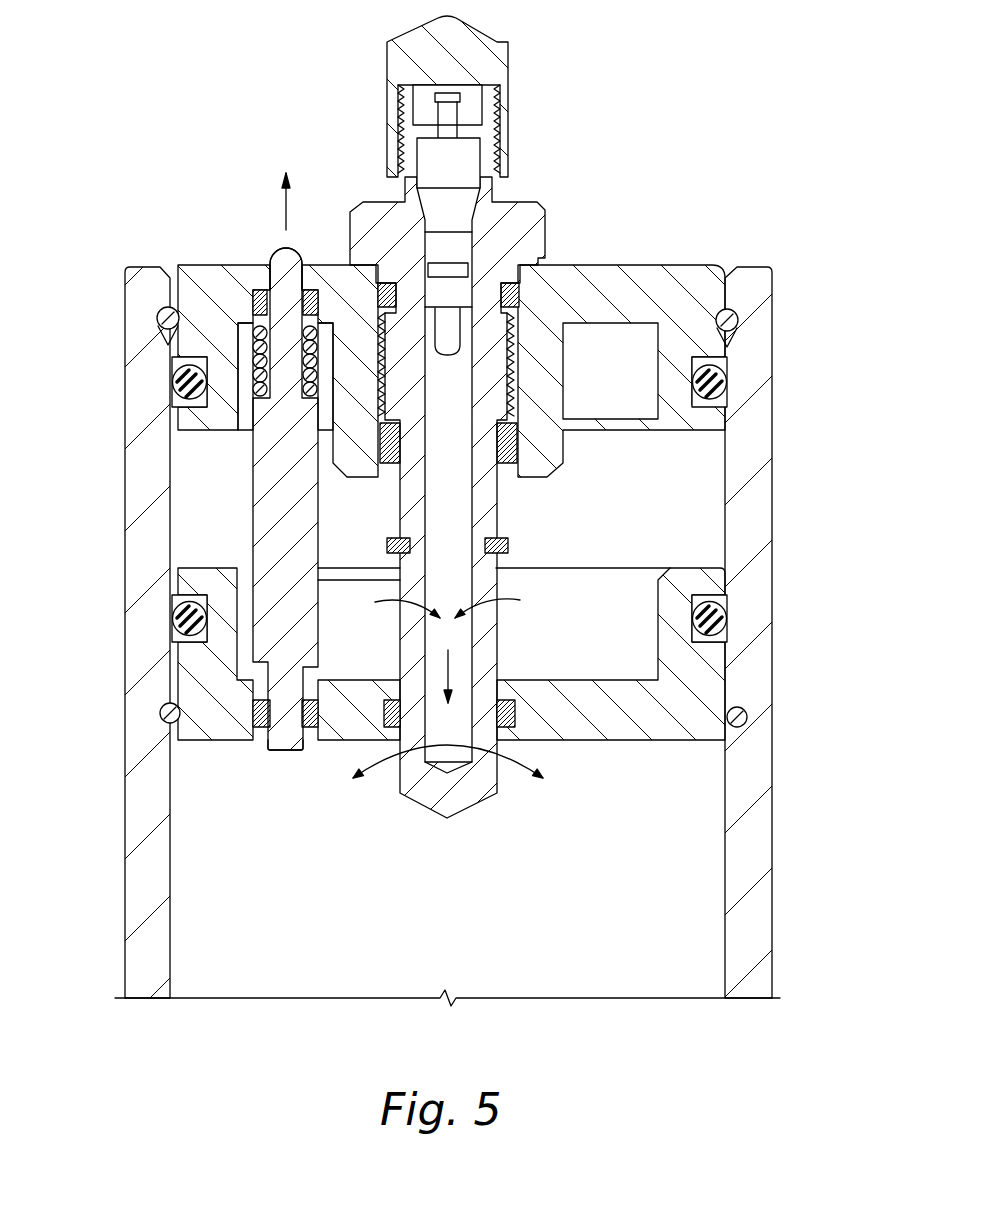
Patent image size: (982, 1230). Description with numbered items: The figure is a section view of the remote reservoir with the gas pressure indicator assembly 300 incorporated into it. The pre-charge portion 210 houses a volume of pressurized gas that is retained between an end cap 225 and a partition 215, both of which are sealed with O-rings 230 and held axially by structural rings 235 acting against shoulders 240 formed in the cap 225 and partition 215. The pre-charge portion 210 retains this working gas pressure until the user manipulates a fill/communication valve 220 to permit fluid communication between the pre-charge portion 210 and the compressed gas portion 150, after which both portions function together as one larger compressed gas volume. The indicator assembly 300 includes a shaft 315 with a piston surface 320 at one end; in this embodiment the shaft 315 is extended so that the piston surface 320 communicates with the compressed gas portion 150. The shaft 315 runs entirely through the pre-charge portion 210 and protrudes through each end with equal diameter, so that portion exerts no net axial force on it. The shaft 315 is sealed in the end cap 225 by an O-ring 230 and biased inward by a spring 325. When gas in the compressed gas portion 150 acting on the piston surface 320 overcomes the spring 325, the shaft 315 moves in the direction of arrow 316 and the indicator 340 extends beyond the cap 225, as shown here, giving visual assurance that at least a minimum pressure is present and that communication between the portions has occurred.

The compressed gas portion 150 is at (200, 828).
The pre-charge portion 210 is at (200, 492).
The partition 215 is at (180, 668).
The fill/communication valve 220 is at (508, 60).
The end cap 225 is at (660, 263).
The O-ring 230 is at (172, 380).
The structural ring 235 is at (156, 316).
The shoulder 240 is at (740, 316).
The gas pressure indicator assembly 300 is at (449, 511).
The shaft 315 is at (262, 528).
The arrow 316 is at (316, 191).
The piston surface 320 is at (287, 748).
The spring 325 is at (240, 390).
The indicator 340 is at (278, 250).